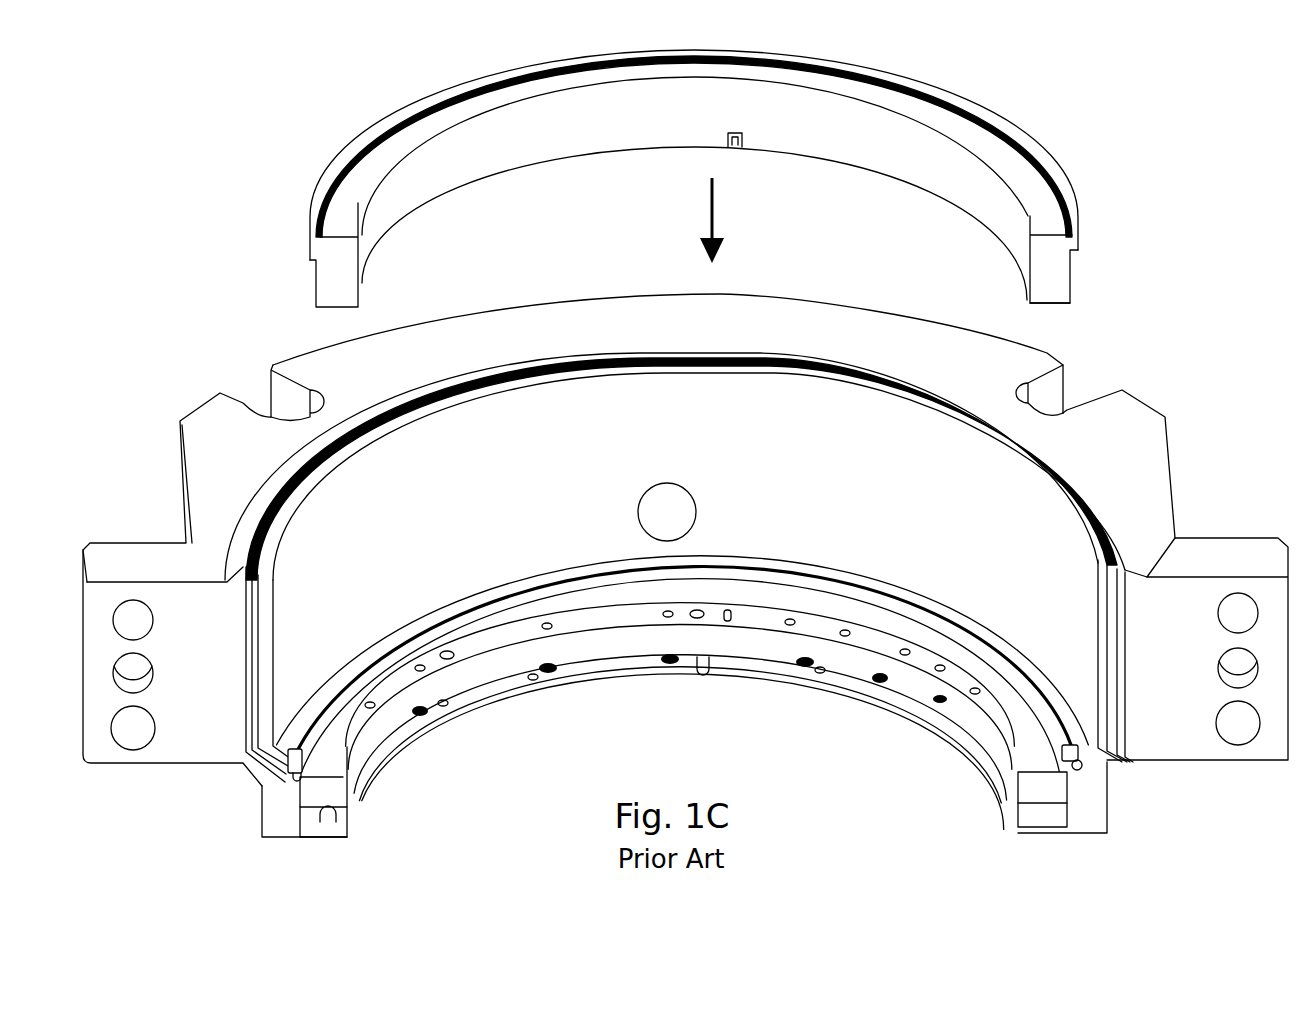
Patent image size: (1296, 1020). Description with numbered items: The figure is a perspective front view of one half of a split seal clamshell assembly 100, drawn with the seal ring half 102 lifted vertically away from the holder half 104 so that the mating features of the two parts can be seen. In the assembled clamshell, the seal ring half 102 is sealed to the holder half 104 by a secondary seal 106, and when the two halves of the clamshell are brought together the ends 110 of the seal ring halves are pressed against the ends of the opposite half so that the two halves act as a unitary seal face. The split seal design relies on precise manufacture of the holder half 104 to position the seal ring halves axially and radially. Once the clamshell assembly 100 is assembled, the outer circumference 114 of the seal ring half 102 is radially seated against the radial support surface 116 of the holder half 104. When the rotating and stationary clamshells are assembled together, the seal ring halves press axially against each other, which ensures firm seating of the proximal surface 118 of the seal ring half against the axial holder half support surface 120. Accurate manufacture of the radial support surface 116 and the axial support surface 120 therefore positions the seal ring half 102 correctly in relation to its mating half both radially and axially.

The clamshell assembly 100 is at (212, 114).
The seal ring half 102 is at (578, 131).
The holder half 104 is at (188, 770).
The secondary seal 106 is at (291, 773).
The ends of the seal ring halves 110 is at (323, 279).
The outer circumference of the seal ring half 114 is at (1082, 238).
The radial support surface 116 is at (501, 606).
The proximal surface of the seal ring half 118 is at (1053, 303).
The axial holder half support surface 120 is at (396, 673).